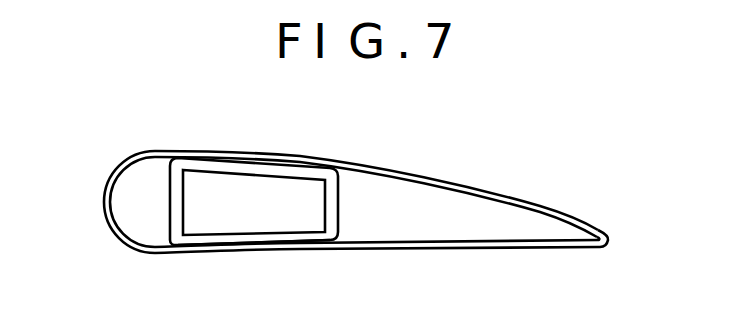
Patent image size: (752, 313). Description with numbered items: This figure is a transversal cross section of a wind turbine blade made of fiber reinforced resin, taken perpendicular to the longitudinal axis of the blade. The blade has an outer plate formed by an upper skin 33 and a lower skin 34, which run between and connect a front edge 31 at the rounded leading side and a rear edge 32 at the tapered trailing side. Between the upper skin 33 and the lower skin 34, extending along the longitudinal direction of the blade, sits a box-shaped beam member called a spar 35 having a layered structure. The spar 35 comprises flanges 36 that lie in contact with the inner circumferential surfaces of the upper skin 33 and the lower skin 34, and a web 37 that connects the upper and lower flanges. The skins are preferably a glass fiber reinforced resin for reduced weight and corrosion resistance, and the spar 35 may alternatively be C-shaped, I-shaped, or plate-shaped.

The front edge 31 is at (103, 201).
The rear edge 32 is at (610, 239).
The upper skin 33 is at (307, 154).
The lower skin 34 is at (335, 247).
The spar 35 is at (343, 206).
The flanges 36 is at (290, 243).
The web 37 is at (333, 217).